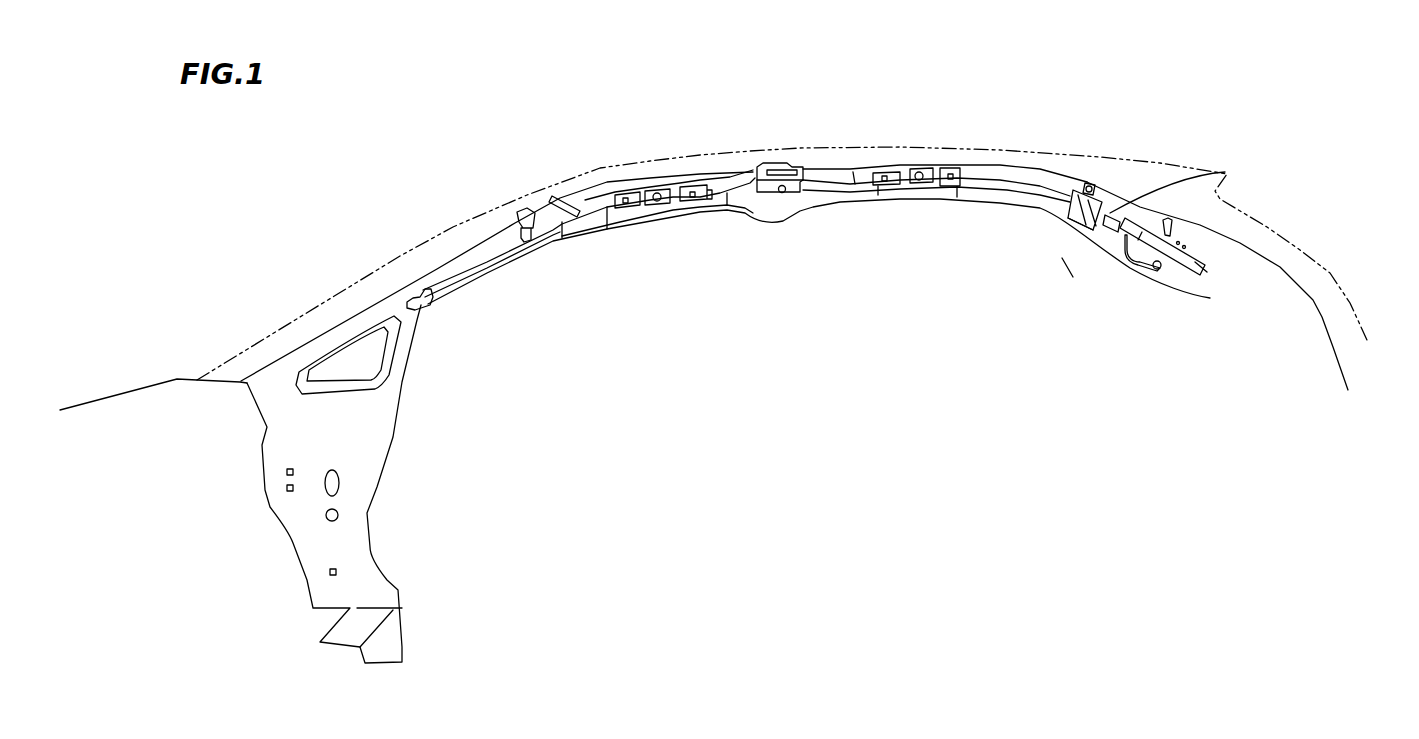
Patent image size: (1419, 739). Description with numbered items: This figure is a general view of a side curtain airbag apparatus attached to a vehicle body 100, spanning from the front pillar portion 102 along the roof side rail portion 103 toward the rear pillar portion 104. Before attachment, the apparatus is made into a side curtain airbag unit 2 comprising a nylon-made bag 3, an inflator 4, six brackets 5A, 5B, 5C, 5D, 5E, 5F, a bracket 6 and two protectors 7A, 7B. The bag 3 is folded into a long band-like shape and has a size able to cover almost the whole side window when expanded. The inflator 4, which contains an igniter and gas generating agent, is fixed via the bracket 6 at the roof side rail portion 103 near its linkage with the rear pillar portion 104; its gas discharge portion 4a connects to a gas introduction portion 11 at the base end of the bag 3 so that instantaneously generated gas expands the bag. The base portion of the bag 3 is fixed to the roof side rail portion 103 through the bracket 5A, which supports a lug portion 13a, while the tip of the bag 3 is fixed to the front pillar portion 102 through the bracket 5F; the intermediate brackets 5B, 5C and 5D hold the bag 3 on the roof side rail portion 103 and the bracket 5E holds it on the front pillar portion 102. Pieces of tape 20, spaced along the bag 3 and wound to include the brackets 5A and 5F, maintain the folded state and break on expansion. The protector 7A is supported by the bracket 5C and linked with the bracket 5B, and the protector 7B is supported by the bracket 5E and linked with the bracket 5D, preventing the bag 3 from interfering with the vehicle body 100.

The vehicle body 100 is at (133, 387).
The front pillar portion 102 is at (433, 273).
The roof side rail portion 103 is at (1032, 175).
The rear pillar portion 104 is at (1240, 250).
The side curtain airbag unit 2 is at (1020, 208).
The bag 3 is at (840, 193).
The inflator 4 is at (1208, 268).
The gas discharge portion 4a is at (1160, 205).
The bracket 5A is at (1090, 198).
The bracket 5B is at (940, 168).
The bracket 5C is at (772, 197).
The bracket 5D is at (643, 195).
The bracket 5E is at (532, 208).
The bracket 5F is at (420, 295).
The bracket 6 is at (1187, 267).
The protector 7A is at (853, 170).
The protector 7B is at (586, 200).
The gas introduction portion 11 is at (1120, 210).
The lug portion 13a is at (1090, 186).
The tape 20 is at (437, 303).